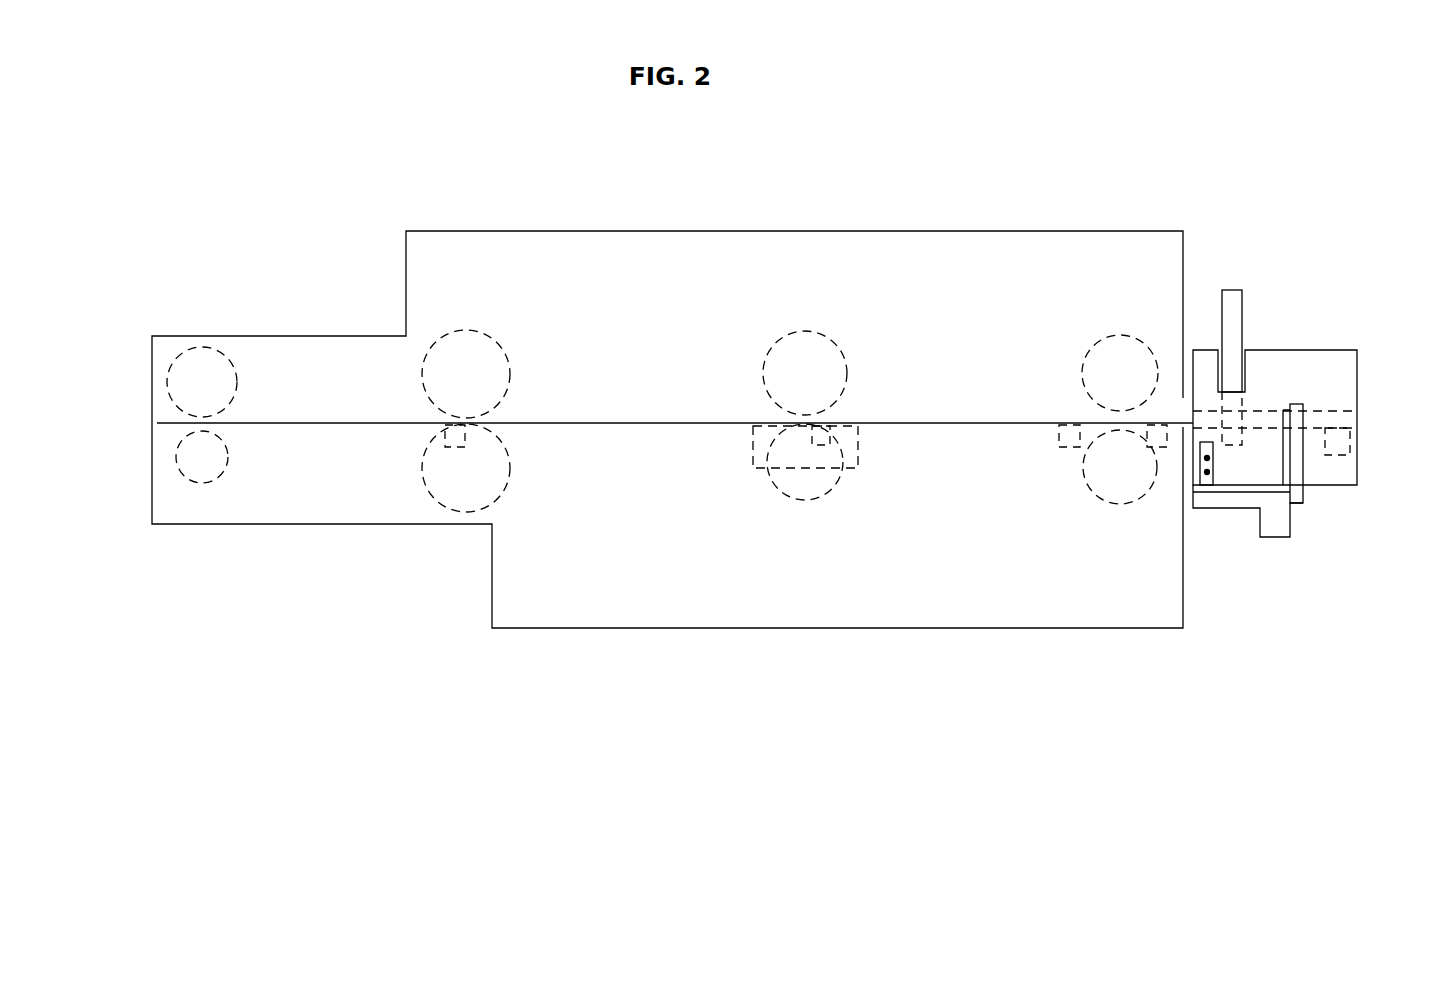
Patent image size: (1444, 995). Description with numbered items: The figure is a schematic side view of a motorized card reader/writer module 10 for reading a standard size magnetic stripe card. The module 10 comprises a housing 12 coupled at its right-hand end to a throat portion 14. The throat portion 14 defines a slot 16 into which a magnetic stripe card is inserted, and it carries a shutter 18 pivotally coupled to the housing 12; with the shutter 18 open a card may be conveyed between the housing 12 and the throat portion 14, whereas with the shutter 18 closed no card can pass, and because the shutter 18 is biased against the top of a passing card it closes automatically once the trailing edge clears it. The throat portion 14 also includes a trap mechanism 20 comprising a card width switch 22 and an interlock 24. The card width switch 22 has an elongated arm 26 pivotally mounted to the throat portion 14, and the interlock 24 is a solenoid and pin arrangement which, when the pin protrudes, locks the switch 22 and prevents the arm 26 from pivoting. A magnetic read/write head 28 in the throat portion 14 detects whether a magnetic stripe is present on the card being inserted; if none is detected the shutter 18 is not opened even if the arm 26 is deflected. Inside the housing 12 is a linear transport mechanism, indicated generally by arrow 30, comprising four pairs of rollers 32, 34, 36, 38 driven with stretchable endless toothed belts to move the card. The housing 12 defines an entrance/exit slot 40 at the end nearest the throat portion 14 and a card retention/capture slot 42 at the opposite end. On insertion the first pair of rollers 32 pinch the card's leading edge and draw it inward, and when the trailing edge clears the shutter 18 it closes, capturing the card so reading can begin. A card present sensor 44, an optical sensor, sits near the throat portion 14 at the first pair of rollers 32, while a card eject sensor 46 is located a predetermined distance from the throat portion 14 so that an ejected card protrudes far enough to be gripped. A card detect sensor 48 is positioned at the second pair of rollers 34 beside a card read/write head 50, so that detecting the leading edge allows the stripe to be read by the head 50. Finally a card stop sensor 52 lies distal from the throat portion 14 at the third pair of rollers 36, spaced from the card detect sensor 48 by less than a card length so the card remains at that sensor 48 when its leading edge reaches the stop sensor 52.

The motorized card reader/writer module 10 is at (280, 172).
The housing 12 is at (893, 231).
The throat portion 14 is at (1327, 350).
The slot 16 is at (1357, 420).
The shutter 18 is at (1233, 290).
The trap mechanism 20 is at (1260, 648).
The card width switch 22 is at (1278, 538).
The interlock 24 is at (1207, 486).
The elongated arm 26 is at (1298, 466).
The read/write head 28 is at (1352, 447).
The linear transport mechanism 30 is at (574, 256).
The first pair of rollers 32 is at (1092, 348).
The second pair of rollers 34 is at (773, 347).
The third pair of rollers 36 is at (510, 366).
The fourth pair of rollers 38 is at (237, 378).
The entrance/exit slot 40 is at (1184, 410).
The card retention/capture slot 42 is at (147, 423).
The card present sensor 44 is at (1165, 447).
The card eject sensor 46 is at (1071, 446).
The card detect sensor 48 is at (842, 458).
The card read/write head 50 is at (750, 460).
The card stop sensor 52 is at (452, 447).